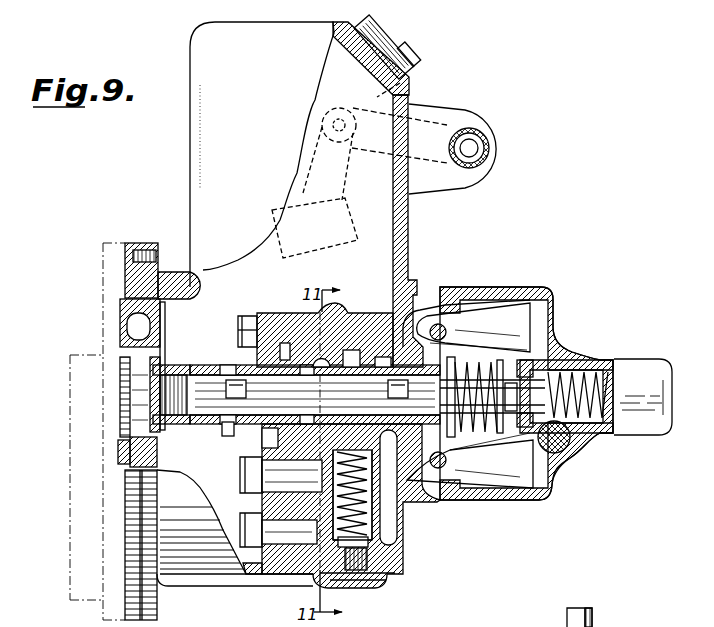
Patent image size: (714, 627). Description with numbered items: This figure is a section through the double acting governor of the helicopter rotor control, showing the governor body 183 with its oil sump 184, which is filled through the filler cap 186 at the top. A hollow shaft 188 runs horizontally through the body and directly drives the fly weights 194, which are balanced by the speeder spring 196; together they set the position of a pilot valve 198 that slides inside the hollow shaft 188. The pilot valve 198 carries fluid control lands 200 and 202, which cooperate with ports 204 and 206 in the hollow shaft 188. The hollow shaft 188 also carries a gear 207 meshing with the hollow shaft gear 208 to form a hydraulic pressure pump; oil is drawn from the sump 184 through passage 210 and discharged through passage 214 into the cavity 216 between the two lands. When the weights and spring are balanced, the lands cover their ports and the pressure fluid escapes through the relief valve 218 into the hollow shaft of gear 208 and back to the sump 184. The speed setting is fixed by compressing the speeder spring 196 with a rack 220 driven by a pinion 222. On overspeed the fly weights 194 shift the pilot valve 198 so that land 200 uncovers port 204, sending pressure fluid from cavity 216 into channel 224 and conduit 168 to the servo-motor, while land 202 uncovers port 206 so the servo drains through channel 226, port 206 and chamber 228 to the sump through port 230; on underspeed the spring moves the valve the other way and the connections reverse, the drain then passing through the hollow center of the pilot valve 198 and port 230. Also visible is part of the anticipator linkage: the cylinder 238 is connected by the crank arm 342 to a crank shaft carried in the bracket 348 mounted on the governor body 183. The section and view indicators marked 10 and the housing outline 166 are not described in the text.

The section line 10 is at (253, 440).
The housing 166 is at (185, 156).
The conduit 168 is at (593, 618).
The governor body 183 is at (176, 286).
The oil sump 184 is at (378, 229).
The filler cap 186 is at (398, 40).
The hollow shaft 188 is at (197, 366).
The fly weights 194 is at (500, 337).
The speeder spring 196 is at (553, 326).
The pilot valve 198 is at (257, 387).
The fluid control land 200 is at (375, 356).
The fluid control land 202 is at (310, 365).
The port 204 is at (380, 413).
The port 206 is at (307, 413).
The gear 207 is at (282, 345).
The hollow shaft gear 208 is at (287, 513).
The passage 210 is at (260, 443).
The passage 214 is at (287, 460).
The cavity 216 is at (350, 357).
The relief valve 218 is at (347, 430).
The rack 220 is at (585, 362).
The pinion 222 is at (572, 447).
The channel 224 is at (395, 515).
The channel 226 is at (328, 365).
The chamber 228 is at (215, 367).
The port 230 is at (223, 431).
The cylinder 238 is at (350, 160).
The crank arm 342 is at (400, 83).
The bracket 348 is at (455, 110).